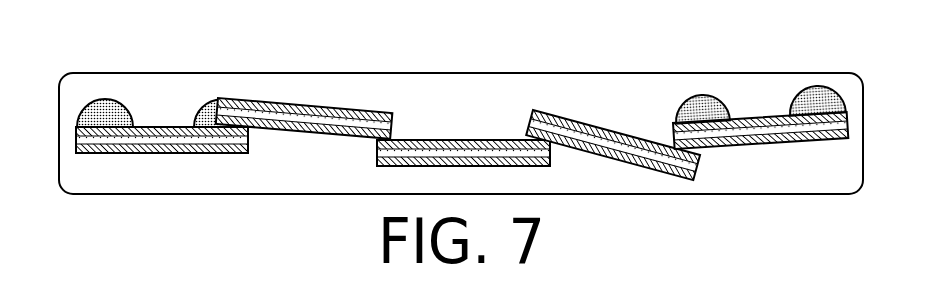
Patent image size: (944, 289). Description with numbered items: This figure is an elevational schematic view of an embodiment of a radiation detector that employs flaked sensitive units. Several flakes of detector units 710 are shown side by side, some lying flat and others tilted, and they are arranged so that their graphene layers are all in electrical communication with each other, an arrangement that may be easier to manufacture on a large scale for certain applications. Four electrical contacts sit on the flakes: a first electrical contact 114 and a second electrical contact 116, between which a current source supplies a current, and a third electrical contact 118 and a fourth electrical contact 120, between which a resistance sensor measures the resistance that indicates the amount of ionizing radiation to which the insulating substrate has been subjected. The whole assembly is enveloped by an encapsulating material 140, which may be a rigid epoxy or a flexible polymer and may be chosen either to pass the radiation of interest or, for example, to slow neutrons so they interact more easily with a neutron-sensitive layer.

The first electrical contact 114 is at (105, 99).
The second electrical contact 116 is at (818, 86).
The third electrical contact 118 is at (223, 99).
The fourth electrical contact 120 is at (703, 95).
The encapsulating material 140 is at (852, 180).
The flakes of detector units 710 is at (165, 153).